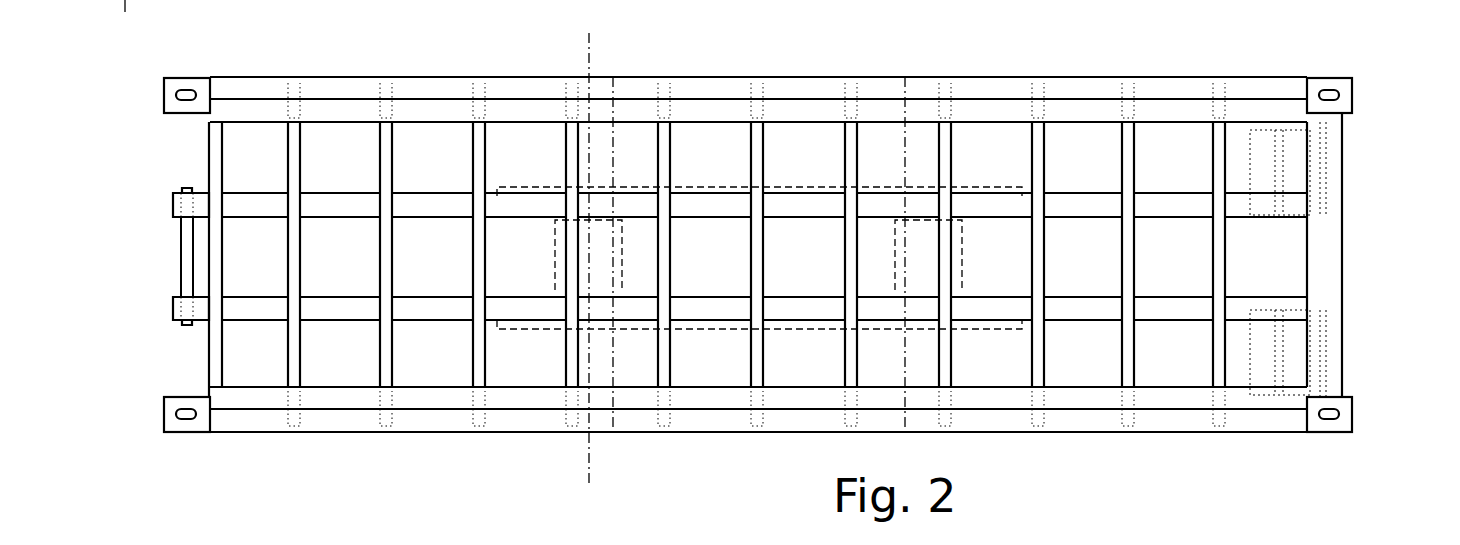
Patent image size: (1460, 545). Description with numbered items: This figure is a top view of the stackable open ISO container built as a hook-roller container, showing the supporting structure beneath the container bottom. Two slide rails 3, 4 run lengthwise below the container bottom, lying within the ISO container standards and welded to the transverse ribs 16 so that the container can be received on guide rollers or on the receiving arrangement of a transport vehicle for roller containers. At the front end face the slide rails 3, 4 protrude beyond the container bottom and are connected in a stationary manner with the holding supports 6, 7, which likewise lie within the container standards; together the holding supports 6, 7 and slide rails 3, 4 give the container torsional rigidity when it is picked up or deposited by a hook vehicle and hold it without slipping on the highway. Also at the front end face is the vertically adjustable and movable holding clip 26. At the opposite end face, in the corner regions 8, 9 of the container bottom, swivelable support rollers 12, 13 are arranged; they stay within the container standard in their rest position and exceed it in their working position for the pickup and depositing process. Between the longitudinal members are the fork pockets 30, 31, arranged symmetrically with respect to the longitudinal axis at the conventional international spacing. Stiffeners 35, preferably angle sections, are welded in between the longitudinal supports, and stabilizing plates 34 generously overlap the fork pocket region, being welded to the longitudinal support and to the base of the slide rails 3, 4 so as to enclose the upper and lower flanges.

The slide rail 3 is at (418, 208).
The slide rail 4 is at (340, 307).
The holding support 6 is at (202, 208).
The holding support 7 is at (188, 260).
The corner region 8 is at (1247, 400).
The corner region 9 is at (1245, 117).
The support roller 12 is at (1327, 160).
The support roller 13 is at (1325, 355).
The transverse rib 16 is at (1210, 383).
The holding clip 26 is at (202, 308).
The fork pocket 30 is at (605, 377).
The fork pocket 31 is at (927, 367).
The stabilizing plate 34 is at (690, 328).
The stiffener 35 is at (1078, 490).